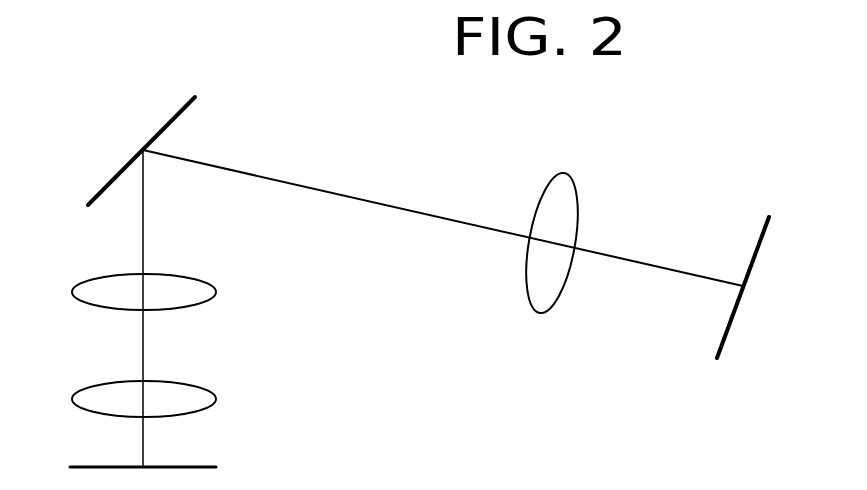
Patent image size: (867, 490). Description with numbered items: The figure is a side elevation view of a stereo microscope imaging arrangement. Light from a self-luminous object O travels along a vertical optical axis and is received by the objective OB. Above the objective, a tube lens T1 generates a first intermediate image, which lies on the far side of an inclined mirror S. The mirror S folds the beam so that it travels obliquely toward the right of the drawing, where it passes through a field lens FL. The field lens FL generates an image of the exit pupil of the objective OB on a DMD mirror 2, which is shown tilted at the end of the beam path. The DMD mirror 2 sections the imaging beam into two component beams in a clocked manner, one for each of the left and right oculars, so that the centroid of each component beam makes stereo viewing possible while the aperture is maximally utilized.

The mirror S is at (165, 141).
The tube lens T1 is at (216, 291).
The objective OB is at (216, 398).
The self-luminous object O is at (220, 464).
The field lens FL is at (542, 208).
The DMD mirror 2 is at (757, 237).